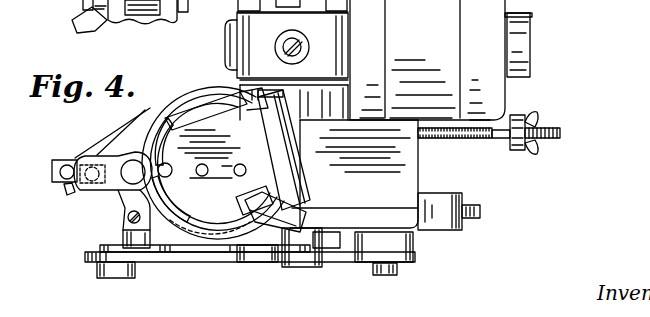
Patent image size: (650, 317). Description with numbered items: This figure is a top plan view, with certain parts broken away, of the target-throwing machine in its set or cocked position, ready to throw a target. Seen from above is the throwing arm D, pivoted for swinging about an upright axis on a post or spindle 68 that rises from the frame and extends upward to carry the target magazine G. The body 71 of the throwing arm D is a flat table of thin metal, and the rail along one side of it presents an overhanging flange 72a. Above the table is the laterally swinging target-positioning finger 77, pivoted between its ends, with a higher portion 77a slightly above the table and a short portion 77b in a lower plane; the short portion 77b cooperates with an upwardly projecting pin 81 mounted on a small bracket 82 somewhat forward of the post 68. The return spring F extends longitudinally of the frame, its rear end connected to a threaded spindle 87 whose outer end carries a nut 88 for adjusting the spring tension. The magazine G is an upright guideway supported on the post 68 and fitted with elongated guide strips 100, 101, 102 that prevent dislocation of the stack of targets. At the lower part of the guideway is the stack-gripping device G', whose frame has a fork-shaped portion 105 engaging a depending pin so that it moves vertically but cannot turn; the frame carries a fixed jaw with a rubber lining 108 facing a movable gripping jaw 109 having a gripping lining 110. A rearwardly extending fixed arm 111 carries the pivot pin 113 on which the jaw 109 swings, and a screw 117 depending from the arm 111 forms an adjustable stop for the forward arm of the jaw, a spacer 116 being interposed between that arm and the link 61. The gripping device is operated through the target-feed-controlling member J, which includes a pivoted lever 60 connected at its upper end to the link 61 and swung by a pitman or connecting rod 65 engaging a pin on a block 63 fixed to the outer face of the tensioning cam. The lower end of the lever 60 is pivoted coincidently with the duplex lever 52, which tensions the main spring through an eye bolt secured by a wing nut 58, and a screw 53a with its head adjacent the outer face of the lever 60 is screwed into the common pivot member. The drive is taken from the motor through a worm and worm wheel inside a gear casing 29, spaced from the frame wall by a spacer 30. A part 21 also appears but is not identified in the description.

The tab 21 is at (76, 16).
The gear casing 29 is at (236, 35).
The pivot pin 113 is at (272, 93).
The spacer 30 is at (308, 97).
The target magazine G is at (213, 151).
The guide strip 100 is at (240, 86).
The guide strip 101 is at (153, 156).
The post or spindle 68 is at (133, 155).
The higher portion of finger 77a is at (123, 142).
The target-positioning finger 77 is at (98, 154).
The pin 81 is at (64, 160).
The bracket 82 is at (53, 172).
The short portion of finger 77b is at (66, 192).
The fork-shaped portion 105 is at (82, 193).
The screw 117 is at (127, 217).
The spacer 116 is at (122, 239).
The target-feed-controlling member J is at (185, 258).
The link 61 is at (192, 253).
The lever 60 is at (220, 258).
The pitman or connecting rod 65 is at (265, 250).
The fixed arm 111 is at (268, 217).
The gripping lining 110 is at (262, 142).
The lining 108 is at (166, 184).
The guide strip 102 is at (239, 205).
The movable gripping jaw 109 is at (279, 146).
The stack-gripping device G' is at (295, 150).
The overhanging flange 72a is at (353, 215).
The body of throwing arm 71 is at (404, 196).
The block 63 is at (318, 234).
The throwing arm D is at (419, 168).
The return spring F is at (468, 140).
The threaded spindle 87 is at (558, 130).
The nut 88 is at (530, 150).
The wing nut 58 is at (472, 220).
The lever 52 is at (447, 226).
The screw 53a is at (400, 269).